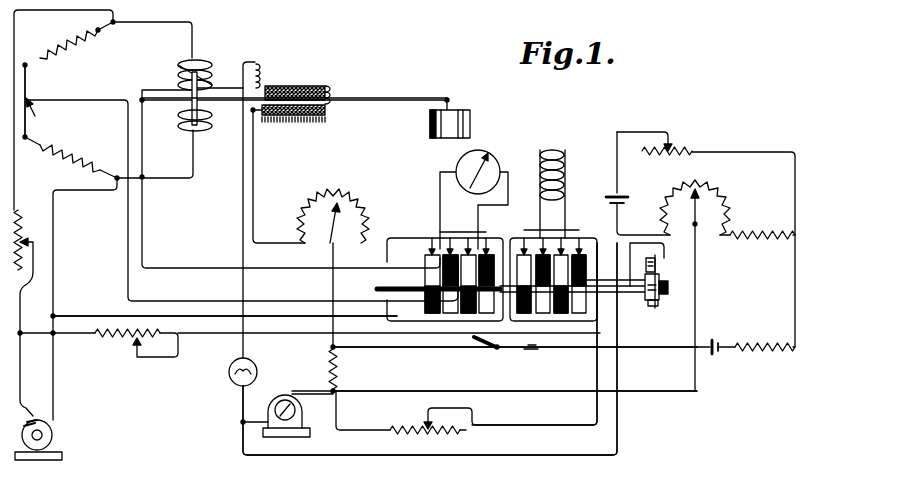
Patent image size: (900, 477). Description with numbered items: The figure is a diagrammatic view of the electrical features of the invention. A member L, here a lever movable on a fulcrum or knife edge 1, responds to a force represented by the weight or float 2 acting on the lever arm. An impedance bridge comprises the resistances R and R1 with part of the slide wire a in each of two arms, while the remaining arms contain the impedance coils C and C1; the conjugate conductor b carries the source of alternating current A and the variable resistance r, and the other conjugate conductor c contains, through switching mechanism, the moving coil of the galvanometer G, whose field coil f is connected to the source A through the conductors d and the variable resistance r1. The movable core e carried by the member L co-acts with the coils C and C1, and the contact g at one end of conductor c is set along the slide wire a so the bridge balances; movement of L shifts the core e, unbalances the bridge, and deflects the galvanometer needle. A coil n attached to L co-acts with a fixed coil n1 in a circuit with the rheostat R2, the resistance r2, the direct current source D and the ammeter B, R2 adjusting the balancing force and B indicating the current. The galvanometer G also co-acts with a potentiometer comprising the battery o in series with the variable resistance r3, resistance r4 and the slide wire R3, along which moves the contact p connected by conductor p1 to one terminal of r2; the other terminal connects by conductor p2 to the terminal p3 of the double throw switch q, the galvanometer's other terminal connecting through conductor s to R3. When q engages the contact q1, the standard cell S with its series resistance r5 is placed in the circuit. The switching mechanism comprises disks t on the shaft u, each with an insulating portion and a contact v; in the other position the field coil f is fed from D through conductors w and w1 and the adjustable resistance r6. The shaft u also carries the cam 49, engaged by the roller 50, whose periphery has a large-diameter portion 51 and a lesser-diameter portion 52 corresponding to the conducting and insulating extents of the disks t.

The fulcrum 1 is at (387, 102).
The weight or float 2 is at (471, 125).
The cam 49 is at (662, 293).
The cam follower or roller 50 is at (658, 261).
The large-diameter cam portion 51 is at (655, 308).
The lesser-diameter cam portion 52 is at (662, 277).
The source of fluctuating or alternating current A is at (52, 433).
The ammeter B is at (255, 369).
The impedance coil C is at (202, 132).
The impedance coil C1 is at (205, 68).
The source of direct current D is at (305, 414).
The galvanometer G is at (494, 161).
The member or lever L is at (346, 97).
The resistance R is at (70, 158).
The resistance R1 is at (76, 49).
The rheostat or adjustable resistance R2 is at (323, 196).
The potentiometer slide wire or resistance R3 is at (714, 196).
The standard cell S is at (714, 338).
The slide wire a is at (26, 80).
The conjugate conductor b is at (14, 30).
The conjugate conductor c is at (110, 104).
The conductors d is at (90, 316).
The magnetizable member or movable core e is at (204, 84).
The field coil f is at (556, 172).
The contact g is at (39, 111).
The coil or electro-magnet n is at (303, 87).
The fixed coil or magnet n1 is at (306, 119).
The battery or source of current o is at (614, 191).
The movable contact p is at (702, 198).
The conductor p1 is at (697, 281).
The conductor p2 is at (438, 350).
The terminal p3 is at (479, 350).
The double throw switch q is at (499, 349).
The contact q1 is at (541, 351).
The variable resistance r is at (22, 224).
The variable resistance r1 is at (122, 340).
The resistance r2 is at (340, 371).
The variable resistance r3 is at (669, 155).
The resistance r4 is at (756, 233).
The series resistance r5 is at (760, 344).
The adjustable resistance r6 is at (441, 433).
The conductor s is at (669, 236).
The switch disk t is at (428, 312).
The shaft u is at (377, 289).
The contact v is at (425, 270).
The conductor w is at (270, 456).
The conductor w1 is at (592, 245).
The contact arm x is at (313, 244).